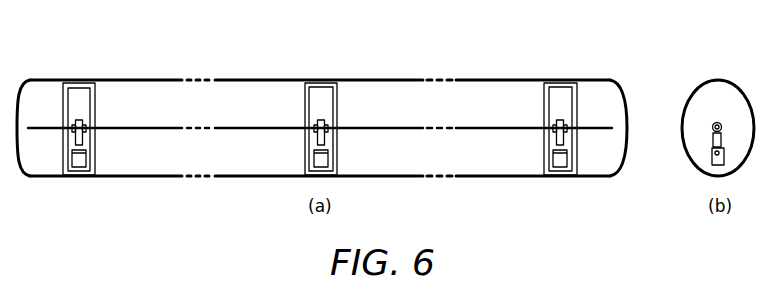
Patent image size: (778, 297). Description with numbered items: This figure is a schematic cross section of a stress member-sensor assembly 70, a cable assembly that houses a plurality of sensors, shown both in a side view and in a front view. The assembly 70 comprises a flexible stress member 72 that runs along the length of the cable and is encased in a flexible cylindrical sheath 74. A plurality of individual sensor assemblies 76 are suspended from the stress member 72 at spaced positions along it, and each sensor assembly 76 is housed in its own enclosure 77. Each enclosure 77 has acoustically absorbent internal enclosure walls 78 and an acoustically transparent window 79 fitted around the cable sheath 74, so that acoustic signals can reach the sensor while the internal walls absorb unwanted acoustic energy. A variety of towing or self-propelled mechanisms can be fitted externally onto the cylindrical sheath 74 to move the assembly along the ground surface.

The stress member-sensor assembly 70 is at (96, 54).
The flexible stress member 72 is at (137, 127).
The flexible cylindrical sheath 74 is at (137, 177).
The sensor assembly 76 is at (312, 157).
The enclosure 77 is at (305, 103).
The acoustically absorbent internal enclosure wall 78 is at (544, 148).
The acoustically transparent window 79 is at (557, 85).